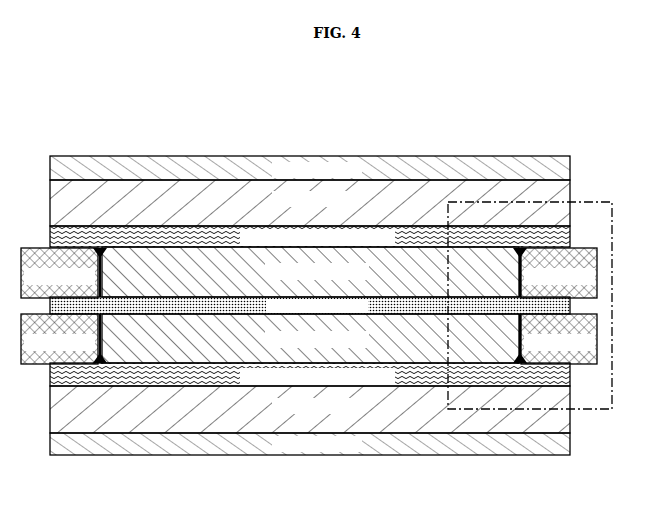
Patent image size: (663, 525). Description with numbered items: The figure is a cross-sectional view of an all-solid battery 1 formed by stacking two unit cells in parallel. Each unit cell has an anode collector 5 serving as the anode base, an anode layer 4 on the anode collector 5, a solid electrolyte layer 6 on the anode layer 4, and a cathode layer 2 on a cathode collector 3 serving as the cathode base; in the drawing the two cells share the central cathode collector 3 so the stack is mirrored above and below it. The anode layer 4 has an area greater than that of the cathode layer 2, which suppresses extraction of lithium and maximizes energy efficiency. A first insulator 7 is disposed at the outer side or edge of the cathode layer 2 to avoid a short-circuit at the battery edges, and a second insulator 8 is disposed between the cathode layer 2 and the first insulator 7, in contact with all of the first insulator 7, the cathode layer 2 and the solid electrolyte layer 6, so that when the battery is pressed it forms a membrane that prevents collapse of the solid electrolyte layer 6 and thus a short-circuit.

The all-solid battery 1 is at (549, 143).
The cathode layer 2 is at (470, 265).
The cathode collector 3 is at (563, 306).
The anode layer 4 is at (562, 190).
The anode collector 5 is at (570, 165).
The solid electrolyte layer 6 is at (563, 237).
The first insulator 7 is at (597, 272).
The second insulator 8 is at (520, 250).